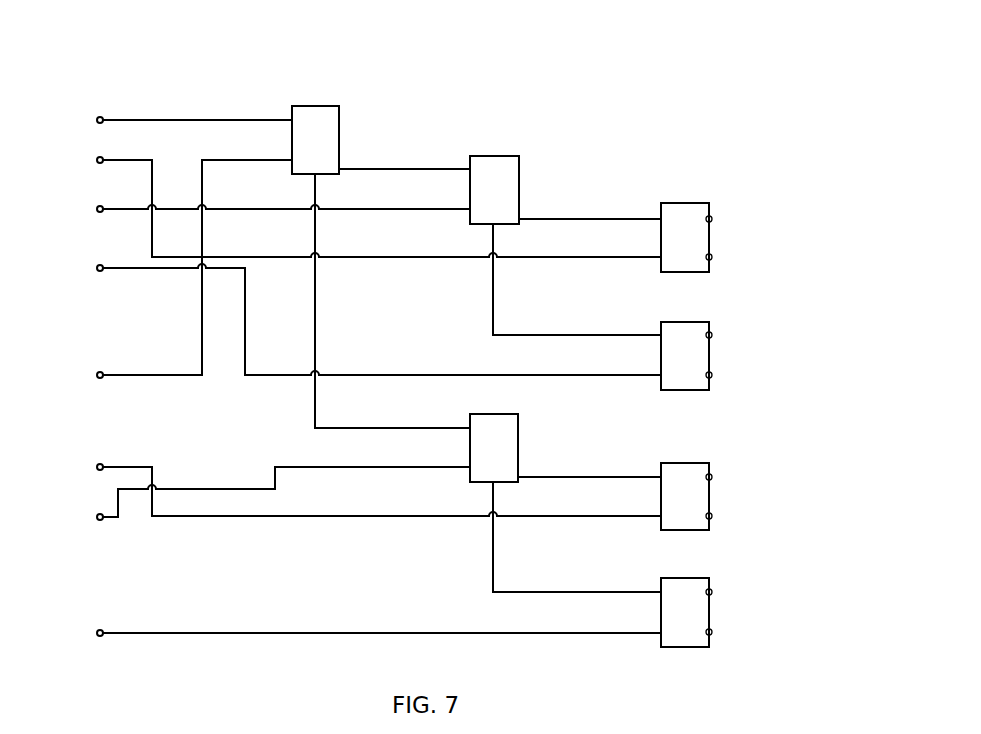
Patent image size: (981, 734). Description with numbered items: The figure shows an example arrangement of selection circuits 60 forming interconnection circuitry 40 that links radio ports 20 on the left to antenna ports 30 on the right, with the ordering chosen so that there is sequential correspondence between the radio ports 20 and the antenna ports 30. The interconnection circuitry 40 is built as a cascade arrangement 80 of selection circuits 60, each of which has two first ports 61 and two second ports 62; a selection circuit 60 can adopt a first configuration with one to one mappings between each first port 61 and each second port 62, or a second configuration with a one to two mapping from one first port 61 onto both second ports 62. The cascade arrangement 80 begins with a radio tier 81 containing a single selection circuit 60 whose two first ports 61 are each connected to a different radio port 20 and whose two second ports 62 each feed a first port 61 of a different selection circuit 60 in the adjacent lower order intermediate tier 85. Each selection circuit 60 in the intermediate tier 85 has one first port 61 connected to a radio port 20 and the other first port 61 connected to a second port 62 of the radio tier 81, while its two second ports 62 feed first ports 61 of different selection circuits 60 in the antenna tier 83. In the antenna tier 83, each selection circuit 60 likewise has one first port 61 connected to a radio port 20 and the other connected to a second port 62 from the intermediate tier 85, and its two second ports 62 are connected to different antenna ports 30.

The radio port 20 is at (97, 160).
The antenna port 30 is at (712, 219).
The interconnection circuitry 40 is at (770, 115).
The selection circuit 60 is at (328, 106).
The first port 61 is at (292, 119).
The second port 62 is at (339, 169).
The cascade arrangement 80 is at (622, 110).
The radio tier 81 is at (318, 58).
The antenna tier 83 is at (683, 58).
The intermediate tier 85 is at (496, 58).